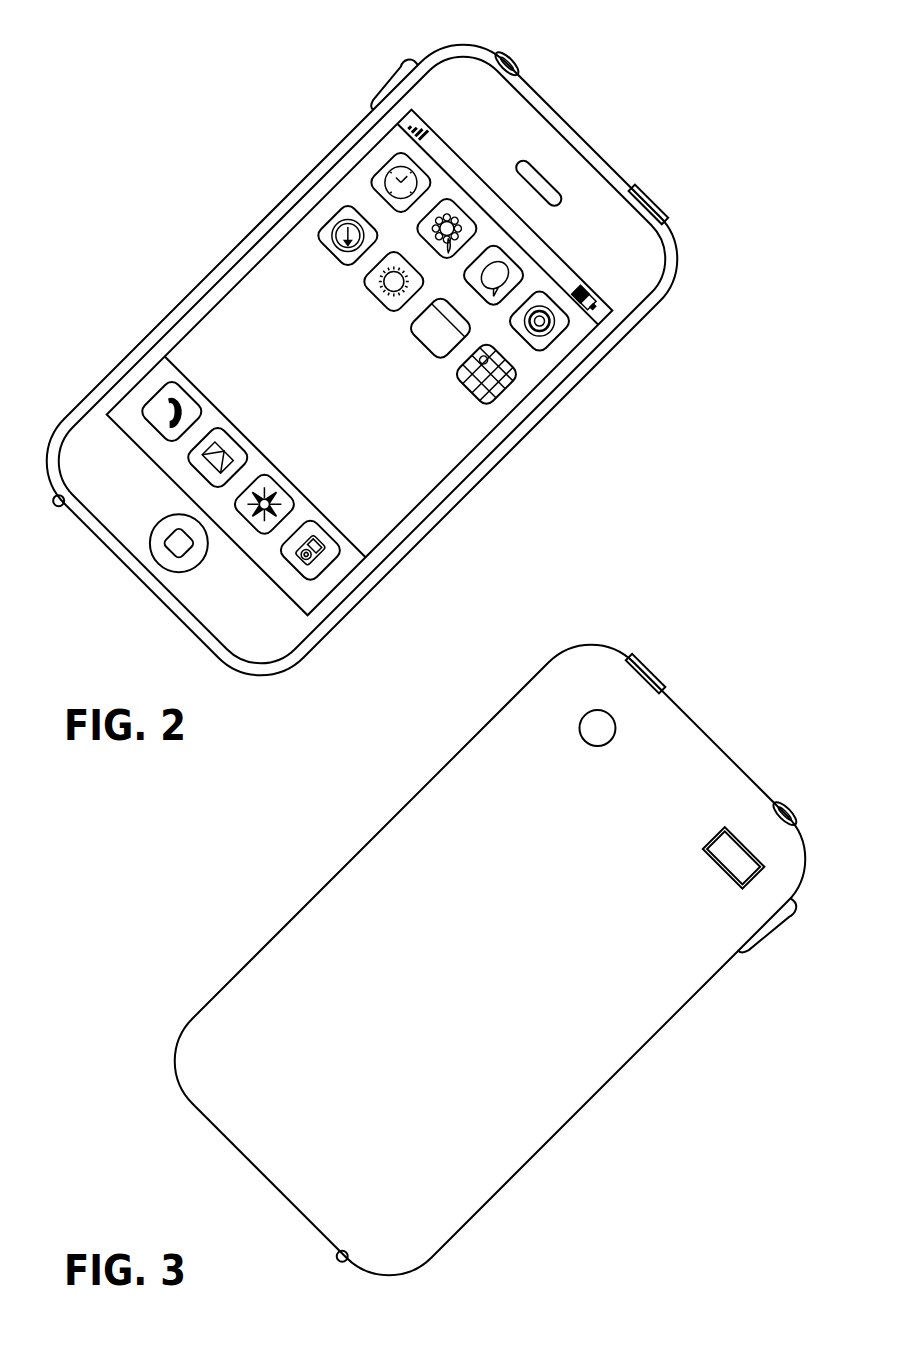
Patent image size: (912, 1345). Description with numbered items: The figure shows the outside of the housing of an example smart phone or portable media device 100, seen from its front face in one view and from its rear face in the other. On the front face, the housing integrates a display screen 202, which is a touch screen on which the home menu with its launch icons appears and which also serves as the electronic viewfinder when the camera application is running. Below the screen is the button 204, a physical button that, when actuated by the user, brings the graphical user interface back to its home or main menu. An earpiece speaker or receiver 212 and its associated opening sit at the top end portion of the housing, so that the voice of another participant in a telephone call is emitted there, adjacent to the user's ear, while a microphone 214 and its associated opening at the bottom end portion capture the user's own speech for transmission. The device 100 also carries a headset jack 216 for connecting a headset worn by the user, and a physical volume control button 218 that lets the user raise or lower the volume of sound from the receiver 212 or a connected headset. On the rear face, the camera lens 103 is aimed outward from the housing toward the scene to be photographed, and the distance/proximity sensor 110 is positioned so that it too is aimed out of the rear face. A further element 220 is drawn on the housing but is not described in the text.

In FIG. 2, the portable media device 100 is at (505, 481).
In FIG. 3, the portable media device 100 is at (598, 1179).
In FIG. 3, the camera lens 103 is at (592, 722).
In FIG. 3, the distance/proximity sensor 110 is at (747, 865).
In FIG. 2, the display screen 202 is at (258, 282).
In FIG. 2, the button 204 is at (186, 560).
In FIG. 2, the earpiece speaker or receiver 212 is at (547, 183).
In FIG. 2, the microphone 214 is at (62, 498).
In FIG. 3, the microphone 214 is at (344, 1258).
In FIG. 2, the headset jack 216 is at (512, 66).
In FIG. 3, the headset jack 216 is at (790, 813).
In FIG. 2, the volume control button 218 is at (365, 97).
In FIG. 3, the volume control button 218 is at (740, 962).
In FIG. 2, the power button 220 is at (660, 212).
In FIG. 3, the power button 220 is at (645, 672).